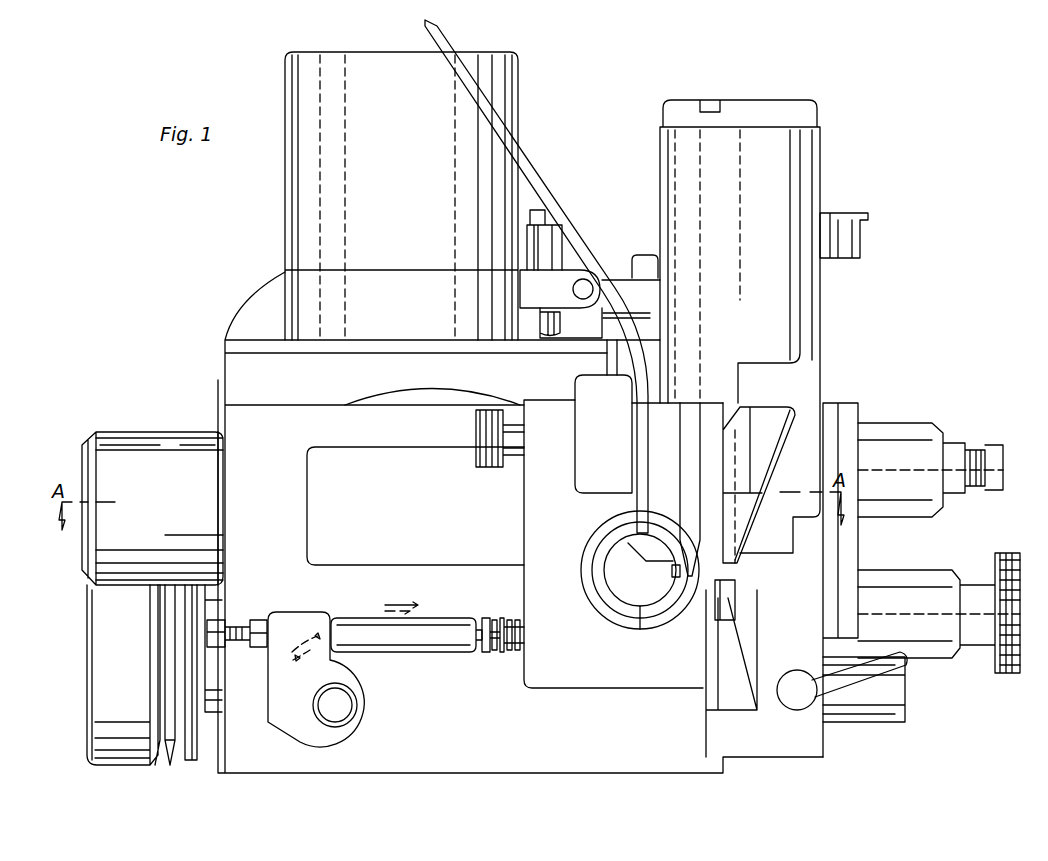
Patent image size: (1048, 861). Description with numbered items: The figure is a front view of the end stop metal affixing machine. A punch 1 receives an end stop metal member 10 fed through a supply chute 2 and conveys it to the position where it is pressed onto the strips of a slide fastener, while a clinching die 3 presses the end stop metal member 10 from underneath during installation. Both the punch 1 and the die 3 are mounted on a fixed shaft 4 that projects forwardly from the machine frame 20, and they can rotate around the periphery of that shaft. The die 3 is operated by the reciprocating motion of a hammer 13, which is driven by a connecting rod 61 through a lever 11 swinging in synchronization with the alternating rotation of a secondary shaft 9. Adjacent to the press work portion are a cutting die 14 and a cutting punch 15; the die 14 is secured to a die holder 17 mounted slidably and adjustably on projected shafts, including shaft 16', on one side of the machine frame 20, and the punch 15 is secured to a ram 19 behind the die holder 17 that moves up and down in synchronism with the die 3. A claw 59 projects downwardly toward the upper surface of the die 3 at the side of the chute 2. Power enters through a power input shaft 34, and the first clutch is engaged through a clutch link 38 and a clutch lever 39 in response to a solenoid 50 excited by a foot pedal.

The punch 1 is at (600, 600).
The supply chute 2 is at (526, 162).
The clinching die 3 is at (645, 620).
The fixed shaft 4 is at (637, 588).
The secondary shaft 9 is at (340, 716).
The end stop metal member 10 is at (678, 580).
The lever 11 is at (300, 701).
The hammer 13 is at (504, 650).
The cutting die 14 is at (728, 600).
The cutting punch 15 is at (728, 553).
The projected shaft 16' is at (859, 687).
The die holder 17 is at (735, 654).
The ram 19 is at (745, 187).
The machine frame 20 is at (232, 425).
The power input shaft 34 is at (212, 652).
The clutch link 38 is at (553, 300).
The clutch lever 39 is at (600, 332).
The solenoid 50 is at (408, 230).
The claw 59 is at (693, 407).
The connecting rod 61 is at (414, 640).